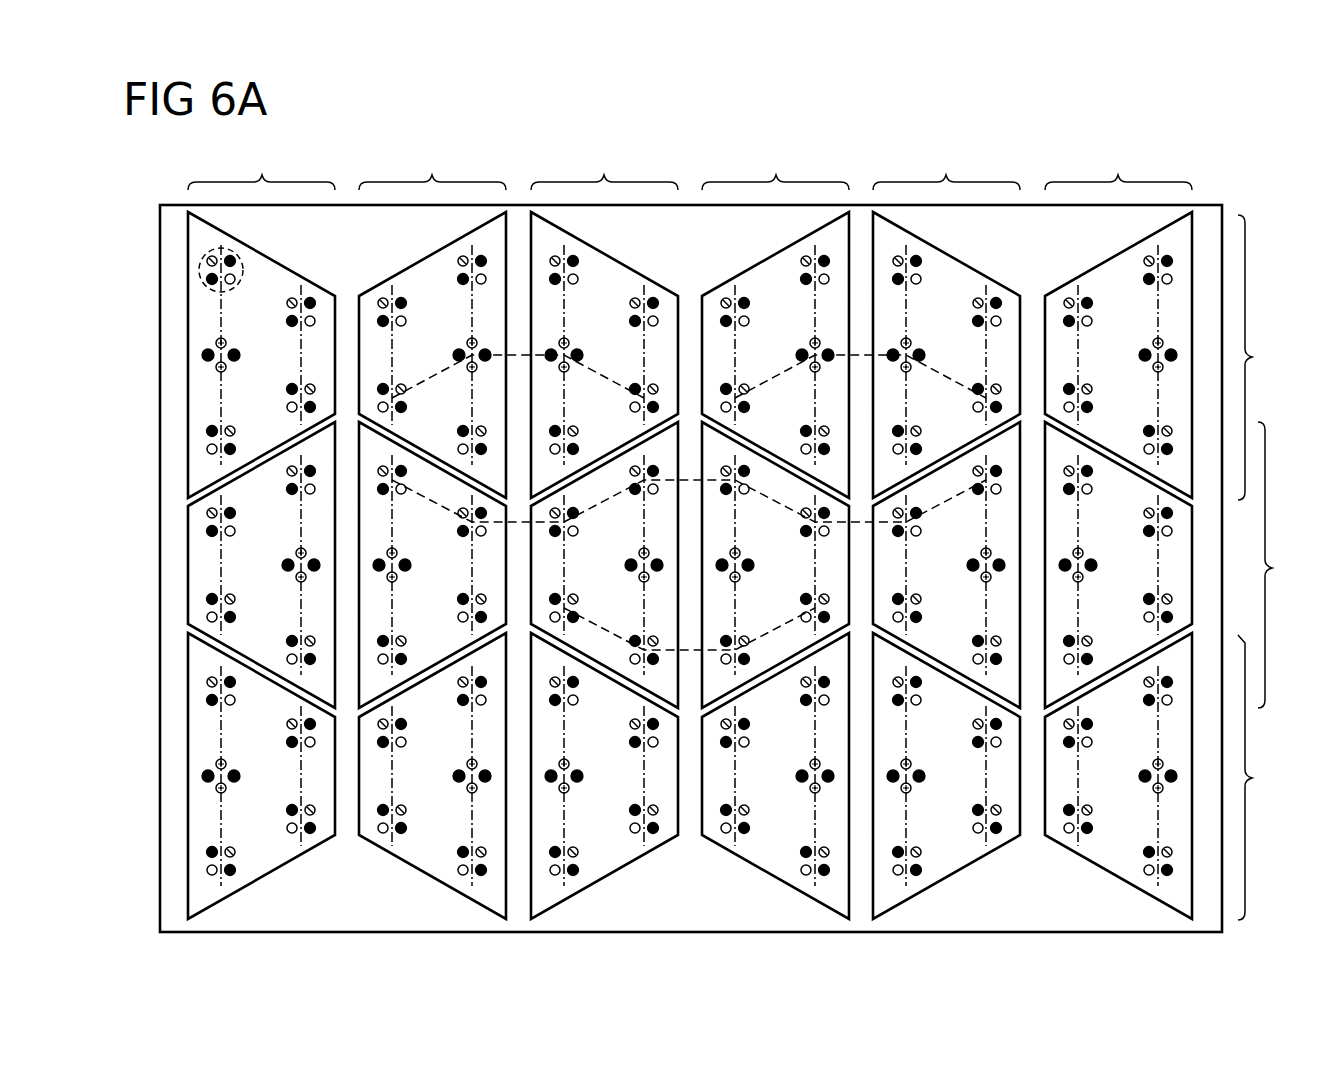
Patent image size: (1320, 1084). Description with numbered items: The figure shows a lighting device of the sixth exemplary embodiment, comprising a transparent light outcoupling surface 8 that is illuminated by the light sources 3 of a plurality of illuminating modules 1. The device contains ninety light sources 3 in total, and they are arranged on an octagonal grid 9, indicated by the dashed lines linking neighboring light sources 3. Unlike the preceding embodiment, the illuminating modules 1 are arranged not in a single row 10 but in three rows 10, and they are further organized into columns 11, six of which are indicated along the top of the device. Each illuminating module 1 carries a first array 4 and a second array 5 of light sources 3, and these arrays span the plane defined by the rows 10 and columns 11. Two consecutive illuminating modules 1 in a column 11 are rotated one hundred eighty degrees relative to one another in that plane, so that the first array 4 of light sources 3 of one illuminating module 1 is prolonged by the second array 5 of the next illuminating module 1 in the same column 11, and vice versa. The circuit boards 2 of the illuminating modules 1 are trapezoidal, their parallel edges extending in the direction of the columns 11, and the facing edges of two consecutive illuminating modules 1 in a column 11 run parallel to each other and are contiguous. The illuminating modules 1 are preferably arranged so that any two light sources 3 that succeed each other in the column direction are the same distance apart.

The illuminating module 1 is at (205, 352).
The circuit board 2 is at (375, 600).
The light source 3 is at (200, 264).
The first array 4 is at (222, 302).
The second array 5 is at (302, 344).
The light outcoupling surface 8 is at (1208, 221).
The octagonal grid 9 is at (588, 368).
The row 10 is at (1276, 567).
The column 11 is at (690, 166).